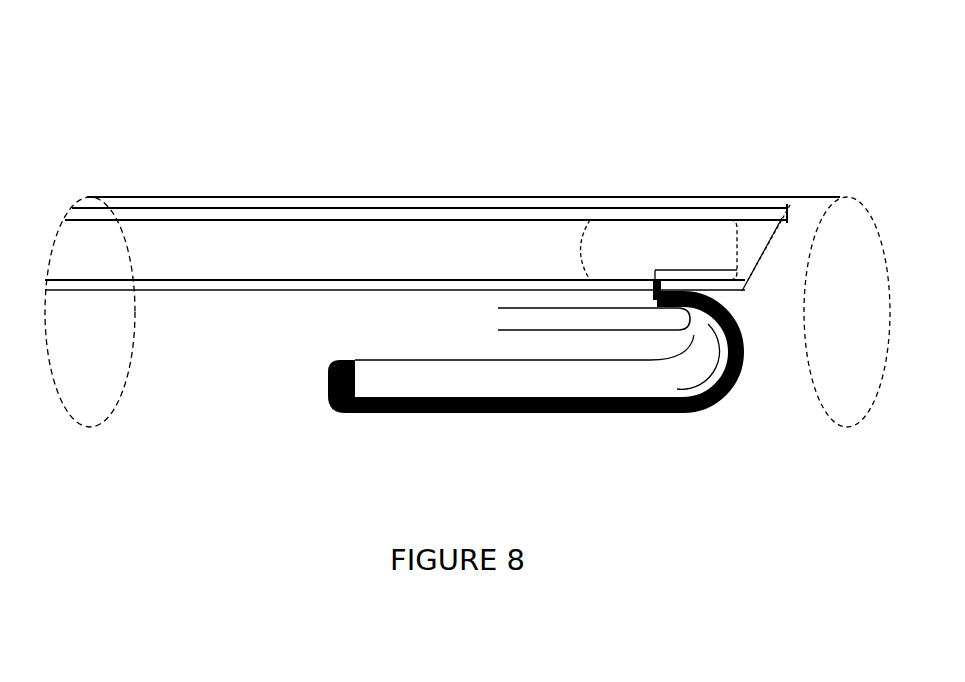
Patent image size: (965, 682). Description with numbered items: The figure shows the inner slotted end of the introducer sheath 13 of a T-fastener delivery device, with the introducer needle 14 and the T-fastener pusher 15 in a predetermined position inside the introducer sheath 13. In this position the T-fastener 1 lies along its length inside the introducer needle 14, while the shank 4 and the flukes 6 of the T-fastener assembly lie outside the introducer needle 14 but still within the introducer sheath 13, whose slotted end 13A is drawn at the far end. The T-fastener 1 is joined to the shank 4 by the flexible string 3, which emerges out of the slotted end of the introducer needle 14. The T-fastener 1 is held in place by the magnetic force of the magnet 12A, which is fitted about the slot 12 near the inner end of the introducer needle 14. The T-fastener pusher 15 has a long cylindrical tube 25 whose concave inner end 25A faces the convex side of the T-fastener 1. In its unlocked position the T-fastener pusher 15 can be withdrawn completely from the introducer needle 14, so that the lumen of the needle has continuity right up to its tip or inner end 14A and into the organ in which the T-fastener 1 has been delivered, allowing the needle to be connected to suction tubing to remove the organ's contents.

The T-fastener 1 is at (633, 217).
The flexible string 3 is at (467, 398).
The shank 4 is at (392, 358).
The flukes 6 is at (623, 310).
The slot 12 is at (745, 342).
The magnet 12A is at (607, 280).
The introducer sheath 13 is at (547, 198).
The slotted end of the introducer sheath 13A is at (865, 205).
The introducer needle 14 is at (313, 205).
The inner end of the introducer needle 14A is at (788, 205).
The T-fastener pusher 15 is at (207, 215).
The long cylindrical tube 25 is at (297, 253).
The concave inner end 25A is at (567, 240).